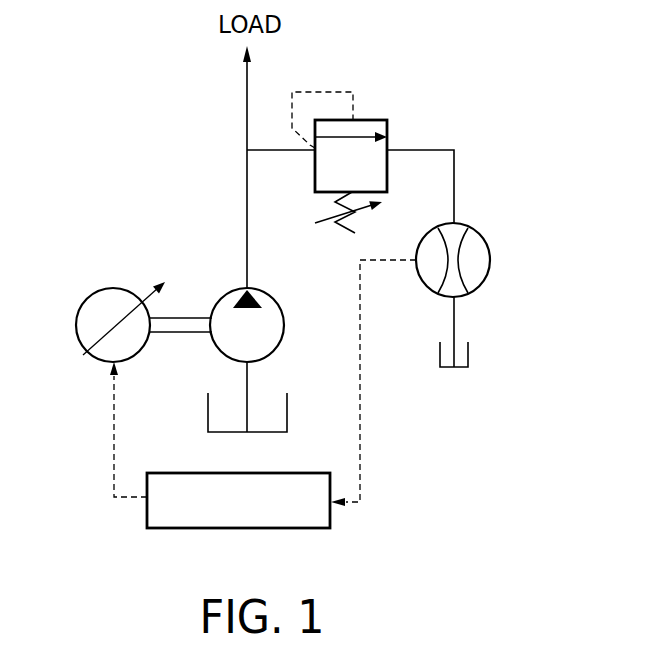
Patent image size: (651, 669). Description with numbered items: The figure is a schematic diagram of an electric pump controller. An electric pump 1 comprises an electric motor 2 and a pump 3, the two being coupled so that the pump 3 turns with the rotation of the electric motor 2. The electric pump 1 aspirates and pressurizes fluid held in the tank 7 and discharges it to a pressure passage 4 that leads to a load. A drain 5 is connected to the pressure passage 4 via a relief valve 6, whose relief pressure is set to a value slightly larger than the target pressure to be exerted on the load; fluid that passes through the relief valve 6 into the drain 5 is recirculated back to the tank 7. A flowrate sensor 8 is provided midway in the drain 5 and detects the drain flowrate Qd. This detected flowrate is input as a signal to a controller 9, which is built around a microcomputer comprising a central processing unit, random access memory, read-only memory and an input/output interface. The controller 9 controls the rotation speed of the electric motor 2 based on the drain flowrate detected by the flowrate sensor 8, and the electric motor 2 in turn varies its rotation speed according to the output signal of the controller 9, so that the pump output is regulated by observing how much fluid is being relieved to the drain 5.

The electric pump 1 is at (66, 257).
The electric motor 2 is at (100, 360).
The pump 3 is at (277, 348).
The pressure passage 4 is at (247, 197).
The drain 5 is at (428, 150).
The relief valve 6 is at (365, 118).
The tank 7 is at (287, 405).
The flowrate sensor 8 is at (482, 233).
The controller 9 is at (307, 528).